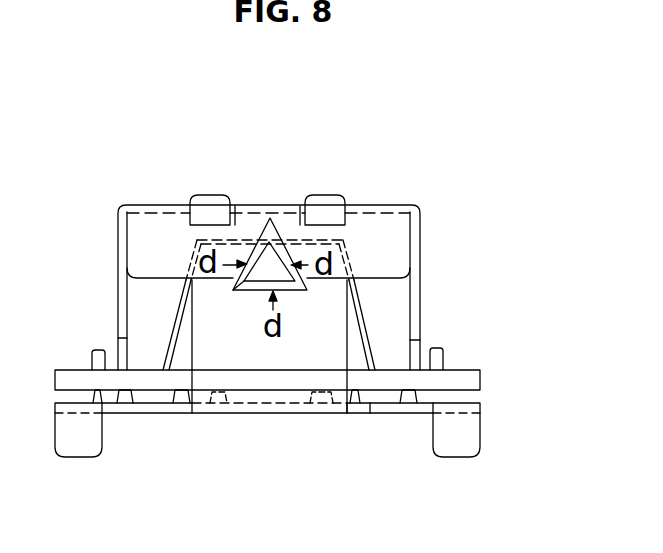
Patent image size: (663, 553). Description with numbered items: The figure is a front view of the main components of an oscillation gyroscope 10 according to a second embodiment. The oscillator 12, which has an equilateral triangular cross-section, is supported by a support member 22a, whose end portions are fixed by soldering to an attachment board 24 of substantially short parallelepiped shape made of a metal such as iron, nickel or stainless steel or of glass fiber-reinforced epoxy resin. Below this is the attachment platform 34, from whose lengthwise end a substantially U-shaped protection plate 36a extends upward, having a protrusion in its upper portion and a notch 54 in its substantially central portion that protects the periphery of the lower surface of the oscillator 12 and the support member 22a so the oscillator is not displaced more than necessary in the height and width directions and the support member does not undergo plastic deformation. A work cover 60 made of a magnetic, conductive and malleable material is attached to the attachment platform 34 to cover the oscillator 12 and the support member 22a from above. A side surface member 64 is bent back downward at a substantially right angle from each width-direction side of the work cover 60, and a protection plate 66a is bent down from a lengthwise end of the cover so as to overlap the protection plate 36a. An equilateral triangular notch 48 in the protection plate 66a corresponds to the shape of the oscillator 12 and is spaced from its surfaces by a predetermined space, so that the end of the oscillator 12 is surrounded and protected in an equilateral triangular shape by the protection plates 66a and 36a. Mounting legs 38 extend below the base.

The oscillation gyroscope 10 is at (493, 171).
The oscillator 12 is at (259, 272).
The support member 22a is at (360, 312).
The attachment board 24 is at (465, 380).
The attachment platform 34 is at (387, 413).
The protection plate 36a is at (210, 207).
The mounting leg 38 is at (80, 442).
The notch 48 is at (272, 222).
The notch 54 is at (236, 289).
The work cover 60 is at (160, 207).
The side surface member 64 is at (118, 250).
The protection plate 66a is at (385, 232).